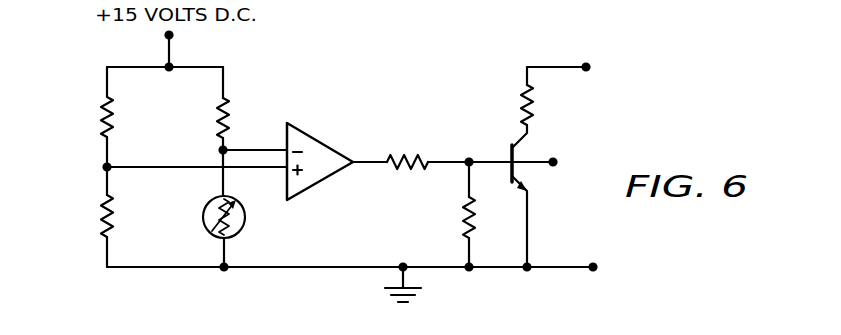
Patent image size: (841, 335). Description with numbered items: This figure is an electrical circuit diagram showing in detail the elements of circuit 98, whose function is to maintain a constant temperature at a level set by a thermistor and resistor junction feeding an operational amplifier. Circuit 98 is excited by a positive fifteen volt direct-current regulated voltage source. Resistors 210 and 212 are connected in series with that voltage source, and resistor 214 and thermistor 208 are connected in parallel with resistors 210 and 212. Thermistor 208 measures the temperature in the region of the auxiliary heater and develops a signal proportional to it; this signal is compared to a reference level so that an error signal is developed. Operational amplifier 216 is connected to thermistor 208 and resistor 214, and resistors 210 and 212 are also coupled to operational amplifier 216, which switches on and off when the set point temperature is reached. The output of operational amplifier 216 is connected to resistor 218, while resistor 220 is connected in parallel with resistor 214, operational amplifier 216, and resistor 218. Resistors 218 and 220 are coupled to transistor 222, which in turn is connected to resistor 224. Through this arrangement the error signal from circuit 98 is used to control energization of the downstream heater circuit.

The circuit 98 is at (436, 82).
The thermistor 208 is at (206, 219).
The resistor 210 is at (99, 113).
The resistor 212 is at (98, 216).
The resistor 214 is at (233, 112).
The operational amplifier 216 is at (333, 132).
The resistor 218 is at (412, 148).
The resistor 220 is at (462, 219).
The transistor 222 is at (523, 179).
The resistor 224 is at (535, 104).